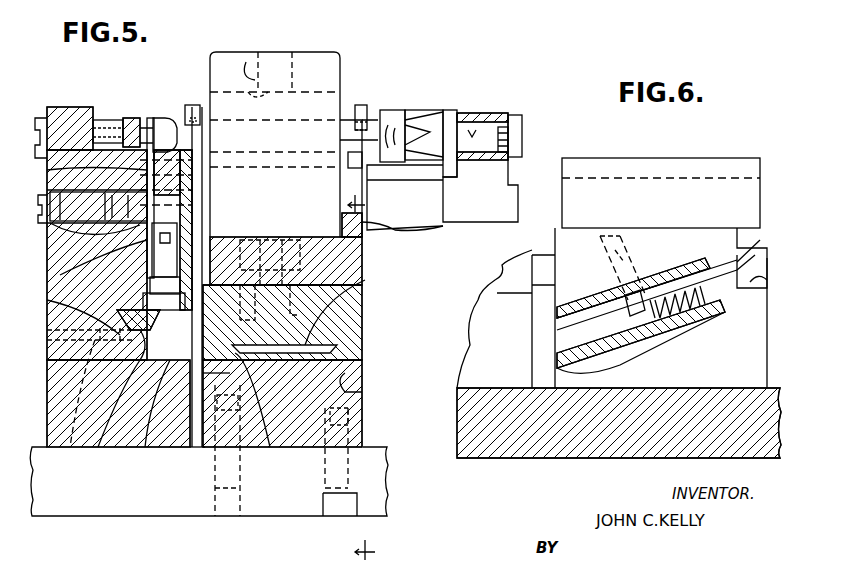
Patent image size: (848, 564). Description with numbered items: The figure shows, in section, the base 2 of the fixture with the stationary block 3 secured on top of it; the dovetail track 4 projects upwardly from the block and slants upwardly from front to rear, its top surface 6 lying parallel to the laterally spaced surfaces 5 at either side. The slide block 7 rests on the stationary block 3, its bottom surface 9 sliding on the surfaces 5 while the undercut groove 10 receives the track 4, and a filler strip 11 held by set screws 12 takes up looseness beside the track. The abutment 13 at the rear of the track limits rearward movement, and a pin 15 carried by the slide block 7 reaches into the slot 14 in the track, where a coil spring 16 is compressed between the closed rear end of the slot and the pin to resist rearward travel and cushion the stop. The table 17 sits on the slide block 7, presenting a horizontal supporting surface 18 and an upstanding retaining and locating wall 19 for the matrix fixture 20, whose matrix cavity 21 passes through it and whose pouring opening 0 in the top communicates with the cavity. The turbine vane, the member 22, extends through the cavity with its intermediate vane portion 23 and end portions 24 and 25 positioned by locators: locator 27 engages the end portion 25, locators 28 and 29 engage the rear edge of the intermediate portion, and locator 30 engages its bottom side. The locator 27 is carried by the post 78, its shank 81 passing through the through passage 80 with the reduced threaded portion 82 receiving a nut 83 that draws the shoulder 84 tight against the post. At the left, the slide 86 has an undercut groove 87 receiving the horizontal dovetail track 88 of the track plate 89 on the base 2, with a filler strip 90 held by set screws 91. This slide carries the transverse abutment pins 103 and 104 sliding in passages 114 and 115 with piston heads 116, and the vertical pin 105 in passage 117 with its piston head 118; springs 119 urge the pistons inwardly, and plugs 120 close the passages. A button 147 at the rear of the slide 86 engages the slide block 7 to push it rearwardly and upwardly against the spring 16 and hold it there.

In FIG. 5, the pouring opening 0 is at (247, 62).
In FIG. 5, the base 2 is at (282, 516).
In FIG. 6, the base 2 is at (602, 450).
In FIG. 5, the stationary block 3 is at (362, 420).
In FIG. 6, the stationary block 3 is at (760, 348).
In FIG. 5, the dovetail track 4 is at (318, 352).
In FIG. 6, the dovetail track 4 is at (767, 265).
In FIG. 5, the laterally spaced surfaces 5 is at (364, 358).
In FIG. 6, the laterally spaced surfaces 5 is at (768, 283).
In FIG. 5, the top surface 6 is at (294, 370).
In FIG. 6, the top surface 6 is at (770, 240).
In FIG. 5, the slide block 7 is at (364, 302).
In FIG. 6, the slide block 7 is at (555, 248).
In FIG. 5, the bottom surface 9 is at (362, 390).
In FIG. 5, the undercut groove 10 is at (270, 360).
In FIG. 5, the filler strip 11 is at (262, 470).
In FIG. 5, the set screws 12 is at (205, 290).
In FIG. 6, the abutment 13 is at (748, 248).
In FIG. 6, the slot 14 is at (640, 335).
In FIG. 6, the pin 15 is at (645, 292).
In FIG. 6, the coil spring 16 is at (700, 308).
In FIG. 5, the table 17 is at (364, 253).
In FIG. 6, the table 17 is at (762, 195).
In FIG. 5, the supporting surface 18 is at (332, 237).
In FIG. 5, the retaining and locating wall 19 is at (380, 230).
In FIG. 5, the matrix fixture 20 is at (342, 75).
In FIG. 5, the matrix cavity 21 is at (270, 74).
In FIG. 5, the member 22 is at (398, 102).
In FIG. 5, the intermediate vane portion 23 is at (174, 118).
In FIG. 5, the end portion 24 is at (162, 117).
In FIG. 5, the end portion 25 is at (418, 110).
In FIG. 5, the locator 27 is at (447, 125).
In FIG. 5, the locator 28 is at (361, 105).
In FIG. 5, the locator 29 is at (192, 105).
In FIG. 5, the locator 30 is at (348, 166).
In FIG. 5, the post 78 is at (510, 173).
In FIG. 5, the through passage 80 is at (480, 120).
In FIG. 5, the shank 81 is at (505, 135).
In FIG. 5, the reduced threaded portion 82 is at (503, 142).
In FIG. 5, the nut 83 is at (512, 125).
In FIG. 5, the shoulder 84 is at (470, 160).
In FIG. 5, the slide 86 is at (48, 330).
In FIG. 6, the slide 86 is at (505, 268).
In FIG. 5, the undercut groove 87 is at (48, 300).
In FIG. 5, the horizontal dovetail track 88 is at (100, 447).
In FIG. 5, the track plate 89 is at (146, 447).
In FIG. 6, the track plate 89 is at (470, 356).
In FIG. 5, the filler strip 90 is at (164, 267).
In FIG. 5, the set screws 91 is at (70, 447).
In FIG. 5, the abutment pin 103 is at (132, 122).
In FIG. 5, the abutment pin 104 is at (150, 228).
In FIG. 5, the abutment pin 105 is at (150, 176).
In FIG. 5, the passage 114 is at (112, 125).
In FIG. 5, the passage 115 is at (150, 195).
In FIG. 5, the piston heads 116 is at (80, 128).
In FIG. 5, the passage 117 is at (150, 165).
In FIG. 5, the piston head 118 is at (150, 207).
In FIG. 5, the springs 119 is at (110, 125).
In FIG. 5, the plugs 120 is at (40, 118).
In FIG. 6, the button 147 is at (540, 258).